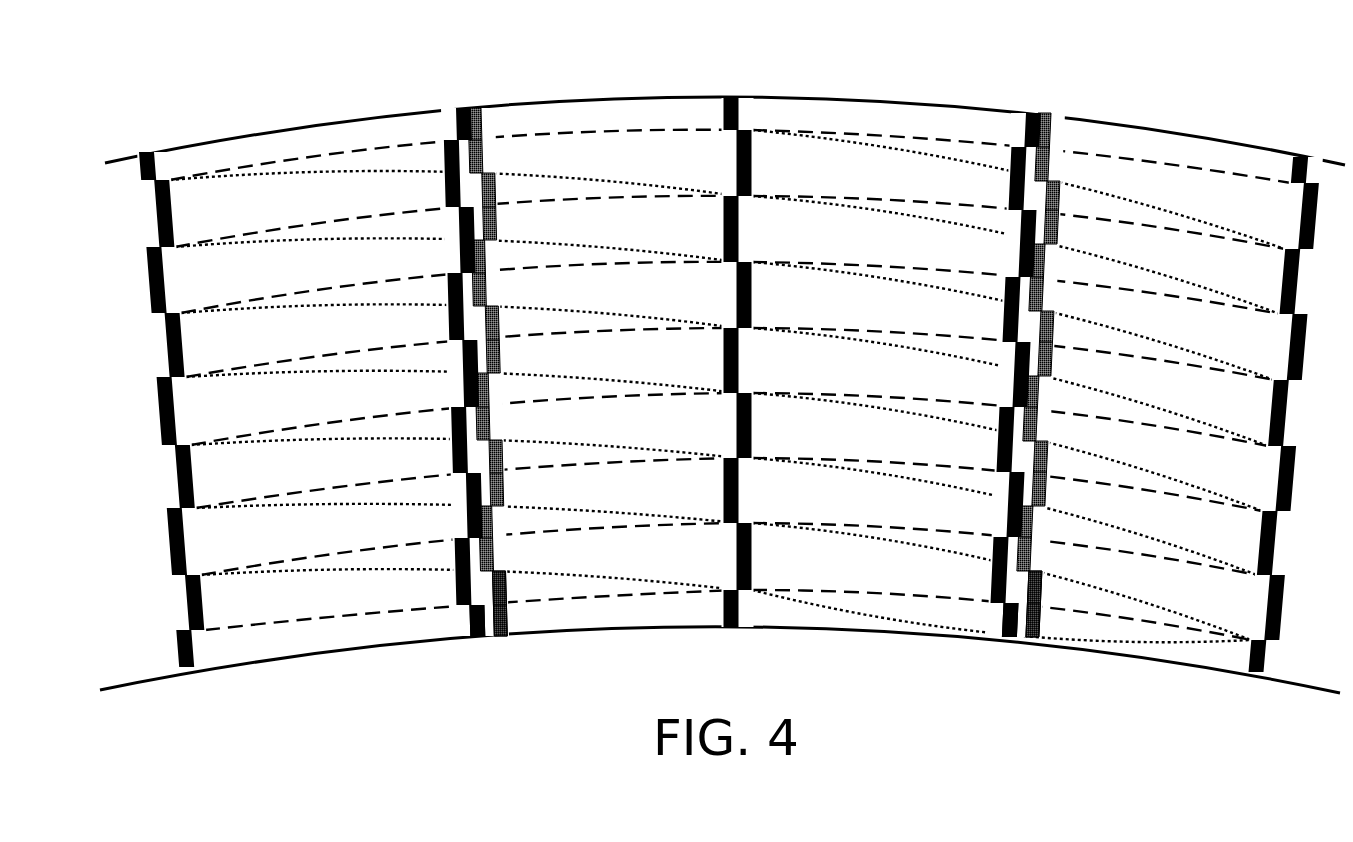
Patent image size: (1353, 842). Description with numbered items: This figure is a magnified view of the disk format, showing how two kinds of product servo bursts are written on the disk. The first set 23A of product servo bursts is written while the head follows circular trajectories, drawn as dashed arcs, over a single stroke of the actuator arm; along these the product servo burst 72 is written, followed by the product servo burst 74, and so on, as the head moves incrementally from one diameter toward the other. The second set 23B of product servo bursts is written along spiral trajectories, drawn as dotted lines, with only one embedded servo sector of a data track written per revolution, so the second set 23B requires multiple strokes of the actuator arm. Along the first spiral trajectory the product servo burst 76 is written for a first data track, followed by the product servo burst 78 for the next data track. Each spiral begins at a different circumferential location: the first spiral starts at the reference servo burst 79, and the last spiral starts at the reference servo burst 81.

The reference servo burst 79 is at (148, 153).
The reference servo burst 81 is at (739, 98).
The product servo burst 72 is at (459, 347).
The product servo burst 74 is at (1029, 351).
The product servo burst 76 is at (446, 186).
The product servo burst 78 is at (1010, 250).
The first set of product servo bursts 23A is at (505, 645).
The second set of product servo bursts 23B is at (473, 645).